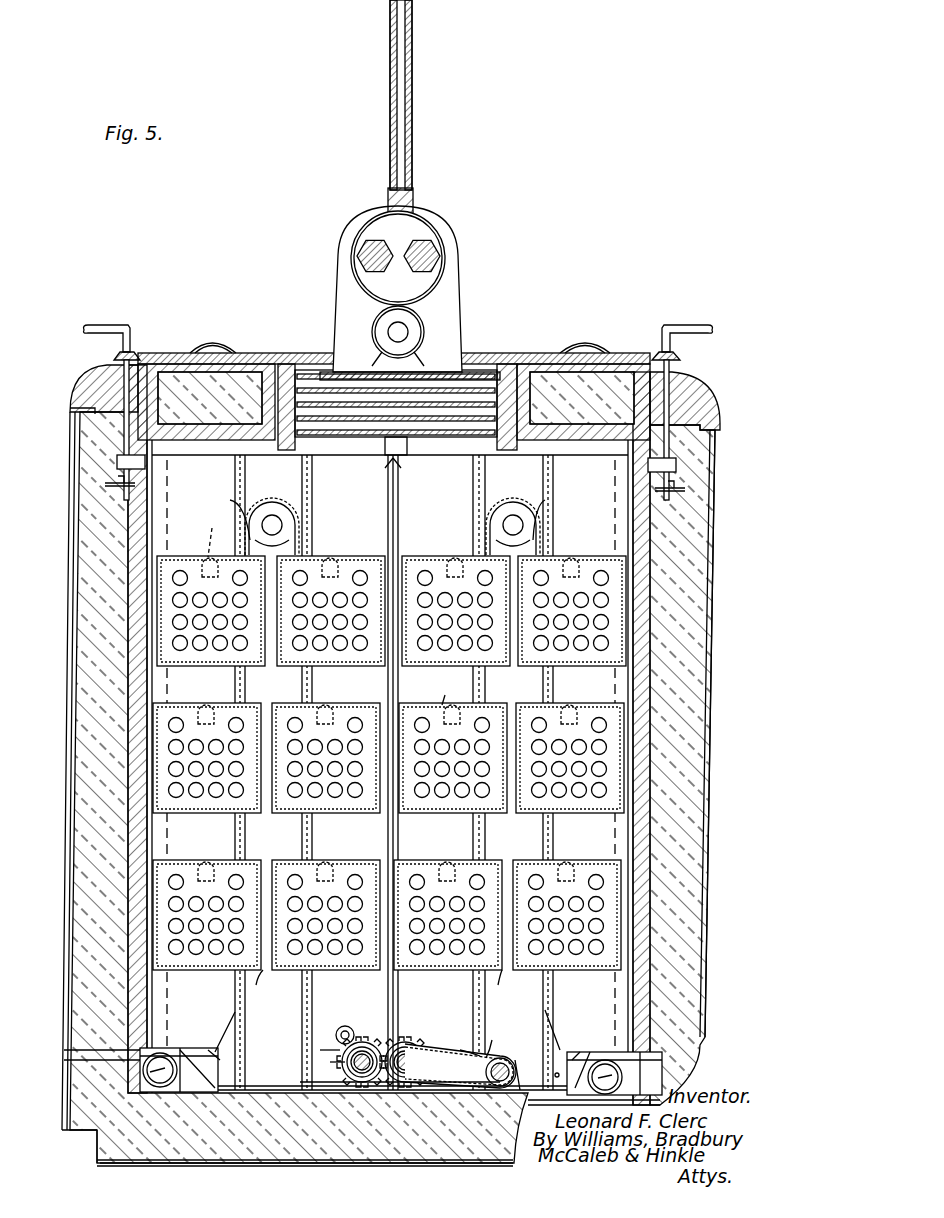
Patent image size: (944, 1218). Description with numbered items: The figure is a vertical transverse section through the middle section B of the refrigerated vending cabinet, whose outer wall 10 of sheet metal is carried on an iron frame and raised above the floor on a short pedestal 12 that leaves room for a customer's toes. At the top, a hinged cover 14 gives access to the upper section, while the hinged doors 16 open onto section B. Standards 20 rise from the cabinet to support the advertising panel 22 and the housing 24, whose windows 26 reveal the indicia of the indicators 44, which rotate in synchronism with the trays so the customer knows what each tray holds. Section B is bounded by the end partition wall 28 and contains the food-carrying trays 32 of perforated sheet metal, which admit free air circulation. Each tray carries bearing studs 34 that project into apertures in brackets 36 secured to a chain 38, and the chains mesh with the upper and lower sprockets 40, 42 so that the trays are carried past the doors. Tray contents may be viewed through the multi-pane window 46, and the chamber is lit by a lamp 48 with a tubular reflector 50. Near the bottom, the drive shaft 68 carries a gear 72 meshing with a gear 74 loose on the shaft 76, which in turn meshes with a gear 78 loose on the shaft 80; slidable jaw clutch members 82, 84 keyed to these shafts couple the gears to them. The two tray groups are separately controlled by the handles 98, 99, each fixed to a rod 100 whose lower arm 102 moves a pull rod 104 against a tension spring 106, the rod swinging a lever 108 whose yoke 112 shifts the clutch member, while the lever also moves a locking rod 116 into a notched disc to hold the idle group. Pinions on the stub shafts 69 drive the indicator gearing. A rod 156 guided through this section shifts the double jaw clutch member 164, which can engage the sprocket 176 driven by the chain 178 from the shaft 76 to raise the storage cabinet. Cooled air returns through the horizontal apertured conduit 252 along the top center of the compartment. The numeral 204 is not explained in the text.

The outer wall 10 is at (70, 680).
The pedestal 12 is at (97, 1158).
The hinged cover 14 is at (310, 370).
The hinged doors 16 is at (180, 398).
The standards 20 is at (346, 277).
The panel 22 is at (413, 116).
The housing 24 is at (400, 216).
The windows 26 is at (352, 250).
The end partition wall 28 is at (365, 772).
The food-carrying trays 32 is at (330, 558).
The bearing studs 34 is at (315, 608).
The brackets 36 is at (305, 548).
The chain 38 is at (255, 512).
The sprocket 40 is at (285, 500).
The sprocket 42 is at (378, 983).
The indicators 44 is at (425, 241).
The window 46 is at (470, 372).
The lamp 48 is at (420, 318).
The reflector 50 is at (408, 332).
The shaft 68 is at (340, 1050).
The stub shafts 69 is at (272, 522).
The gear 72 is at (360, 1042).
The gear 74 is at (370, 1035).
The shaft 76 is at (348, 1026).
The gear 78 is at (404, 1042).
The shaft 80 is at (395, 1052).
The jaw clutch member 82 is at (342, 1060).
The jaw clutch member 84 is at (472, 1042).
The handle 98 is at (122, 328).
The handle 99 is at (688, 342).
The rod 100 is at (120, 745).
The arm 102 is at (162, 1058).
The pull rod 104 is at (385, 1055).
The tension spring 106 is at (180, 1082).
The lever 108 is at (225, 1060).
The yokes 112 is at (352, 1070).
The locking rod 116 is at (352, 1080).
The rod 156 is at (550, 1064).
The double jaw clutch member 164 is at (518, 1060).
The sprocket 176 is at (500, 1058).
The chain 178 is at (475, 1040).
The guide 204 is at (100, 1060).
The apertured conduit 252 is at (408, 447).
The section B is at (170, 997).